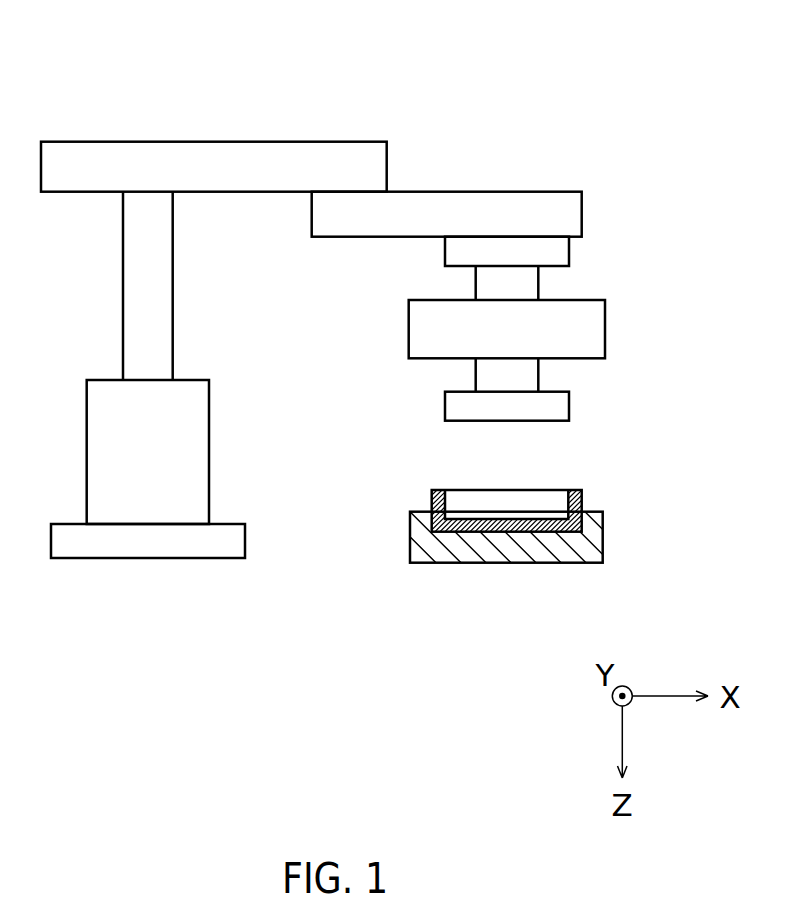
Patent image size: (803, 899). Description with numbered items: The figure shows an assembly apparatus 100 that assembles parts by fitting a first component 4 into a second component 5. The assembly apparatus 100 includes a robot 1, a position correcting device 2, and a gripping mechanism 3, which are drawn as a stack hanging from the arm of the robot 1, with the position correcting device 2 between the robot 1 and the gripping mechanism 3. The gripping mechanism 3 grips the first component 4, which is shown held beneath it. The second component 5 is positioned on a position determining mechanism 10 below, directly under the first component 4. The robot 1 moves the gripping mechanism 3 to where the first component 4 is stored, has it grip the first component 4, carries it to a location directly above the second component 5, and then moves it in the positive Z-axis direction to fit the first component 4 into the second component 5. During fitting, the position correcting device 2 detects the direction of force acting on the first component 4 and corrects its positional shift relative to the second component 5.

The assembly apparatus 100 is at (576, 108).
The robot 1 is at (277, 141).
The position correcting device 2 is at (538, 286).
The gripping mechanism 3 is at (605, 318).
The first component 4 is at (569, 404).
The second component 5 is at (578, 490).
The position determining mechanism 10 is at (603, 543).